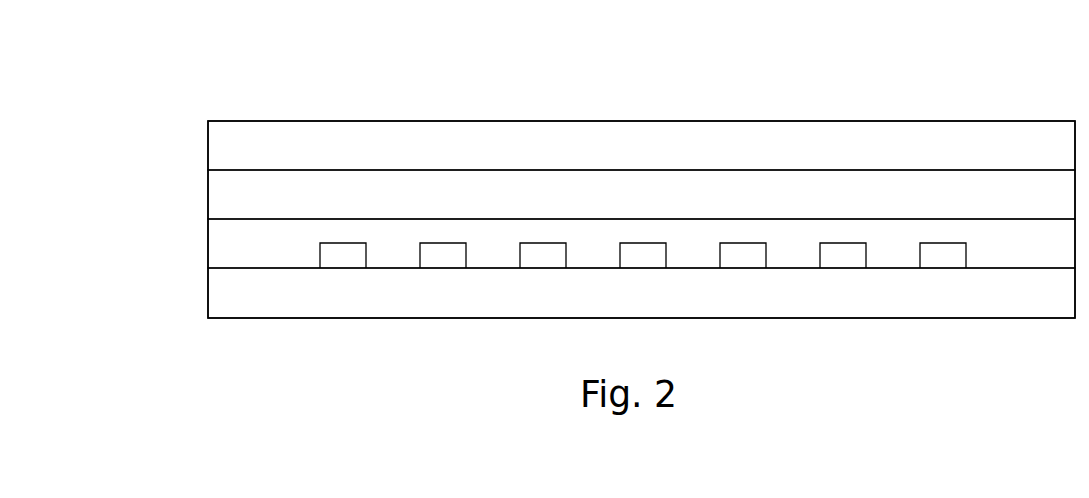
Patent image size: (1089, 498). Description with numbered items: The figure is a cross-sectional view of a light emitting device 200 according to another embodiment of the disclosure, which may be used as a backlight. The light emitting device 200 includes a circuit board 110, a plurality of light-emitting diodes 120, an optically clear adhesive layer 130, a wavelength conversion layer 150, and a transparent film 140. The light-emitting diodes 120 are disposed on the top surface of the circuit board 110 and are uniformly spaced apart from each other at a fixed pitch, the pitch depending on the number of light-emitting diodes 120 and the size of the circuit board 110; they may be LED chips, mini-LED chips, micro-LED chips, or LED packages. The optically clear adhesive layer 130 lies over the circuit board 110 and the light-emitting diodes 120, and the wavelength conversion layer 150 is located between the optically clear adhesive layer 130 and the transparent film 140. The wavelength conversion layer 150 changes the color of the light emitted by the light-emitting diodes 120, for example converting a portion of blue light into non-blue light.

The light emitting device 200 is at (143, 57).
The circuit board 110 is at (220, 290).
The light-emitting diodes 120 is at (340, 258).
The optically clear adhesive layer 130 is at (220, 239).
The wavelength conversion layer 150 is at (220, 192).
The transparent film 140 is at (220, 146).